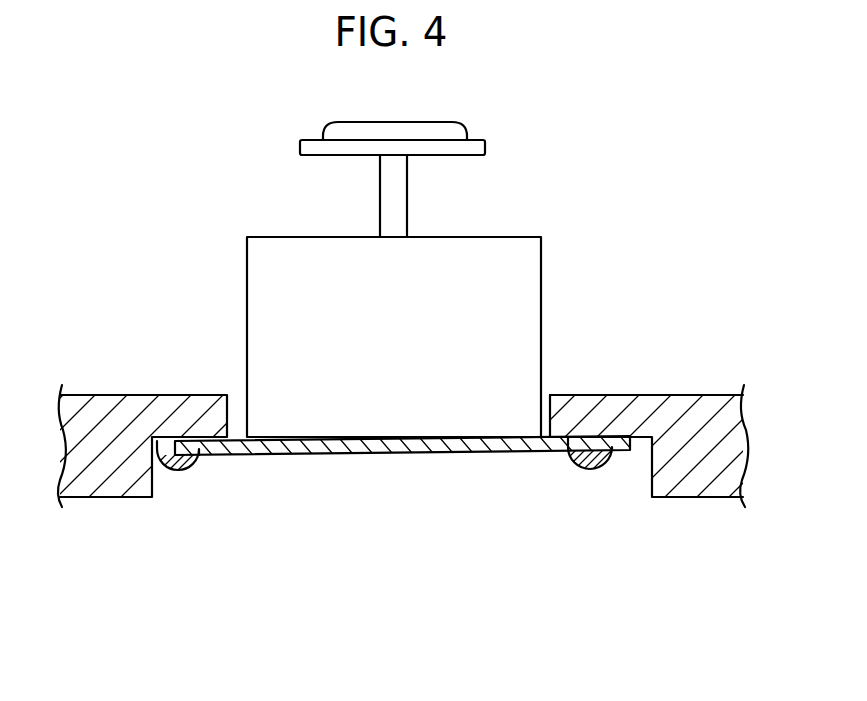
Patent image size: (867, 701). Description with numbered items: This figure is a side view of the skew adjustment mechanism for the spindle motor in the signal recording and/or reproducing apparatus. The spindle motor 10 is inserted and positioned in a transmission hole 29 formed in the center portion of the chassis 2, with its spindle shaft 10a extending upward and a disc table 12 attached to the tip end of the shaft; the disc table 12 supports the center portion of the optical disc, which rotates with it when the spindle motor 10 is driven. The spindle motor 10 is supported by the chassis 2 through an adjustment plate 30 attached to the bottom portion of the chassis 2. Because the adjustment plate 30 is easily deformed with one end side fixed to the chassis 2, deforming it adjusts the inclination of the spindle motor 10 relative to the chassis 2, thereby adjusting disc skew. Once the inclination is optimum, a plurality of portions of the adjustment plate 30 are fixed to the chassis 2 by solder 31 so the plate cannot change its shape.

The chassis 2 is at (663, 398).
The spindle motor 10 is at (523, 292).
The spindle shaft 10a is at (397, 210).
The disc table 12 is at (483, 143).
The transmission hole 29 is at (232, 403).
The adjustment plate 30 is at (352, 450).
The solder 31 is at (193, 472).